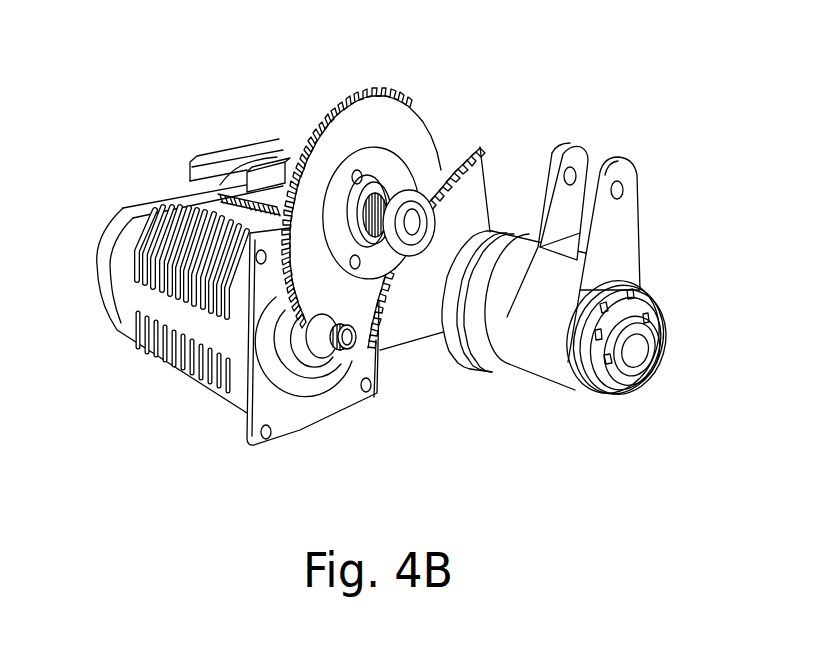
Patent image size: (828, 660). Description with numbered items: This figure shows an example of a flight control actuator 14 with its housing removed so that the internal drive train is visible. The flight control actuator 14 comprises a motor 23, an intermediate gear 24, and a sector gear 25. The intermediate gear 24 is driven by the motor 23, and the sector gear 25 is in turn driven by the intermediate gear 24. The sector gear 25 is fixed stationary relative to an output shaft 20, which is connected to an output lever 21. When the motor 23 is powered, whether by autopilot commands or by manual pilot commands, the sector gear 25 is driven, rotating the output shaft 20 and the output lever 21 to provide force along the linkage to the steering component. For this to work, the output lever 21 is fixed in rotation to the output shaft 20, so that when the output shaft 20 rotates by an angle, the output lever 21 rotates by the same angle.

The flight control actuator 14 is at (195, 76).
The output shaft 20 is at (648, 347).
The output lever 21 is at (613, 222).
The motor 23 is at (133, 228).
The intermediate gear 24 is at (399, 123).
The sector gear 25 is at (475, 188).